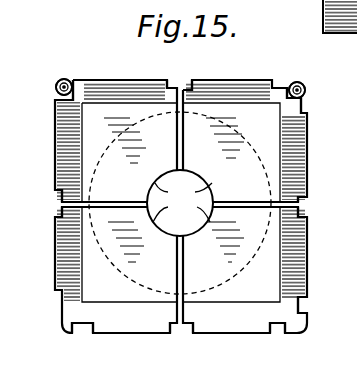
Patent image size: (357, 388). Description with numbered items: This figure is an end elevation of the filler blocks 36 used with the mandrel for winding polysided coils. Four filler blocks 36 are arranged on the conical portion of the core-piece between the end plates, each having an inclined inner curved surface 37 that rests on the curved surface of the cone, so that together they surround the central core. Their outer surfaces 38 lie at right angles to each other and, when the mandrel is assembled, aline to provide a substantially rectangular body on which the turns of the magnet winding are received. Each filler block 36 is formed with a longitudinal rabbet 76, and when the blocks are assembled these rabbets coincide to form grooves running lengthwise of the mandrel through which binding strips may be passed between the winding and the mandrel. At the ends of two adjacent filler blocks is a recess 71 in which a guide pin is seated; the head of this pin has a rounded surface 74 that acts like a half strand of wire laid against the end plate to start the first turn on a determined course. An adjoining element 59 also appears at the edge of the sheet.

The plate section 36 is at (64, 157).
The central opening 37 is at (180, 203).
The flange 38 is at (145, 85).
The notch 76 is at (80, 84).
The pivot pin 71 is at (64, 79).
The washer 74 is at (55, 85).
The frame member 59 is at (323, 6).